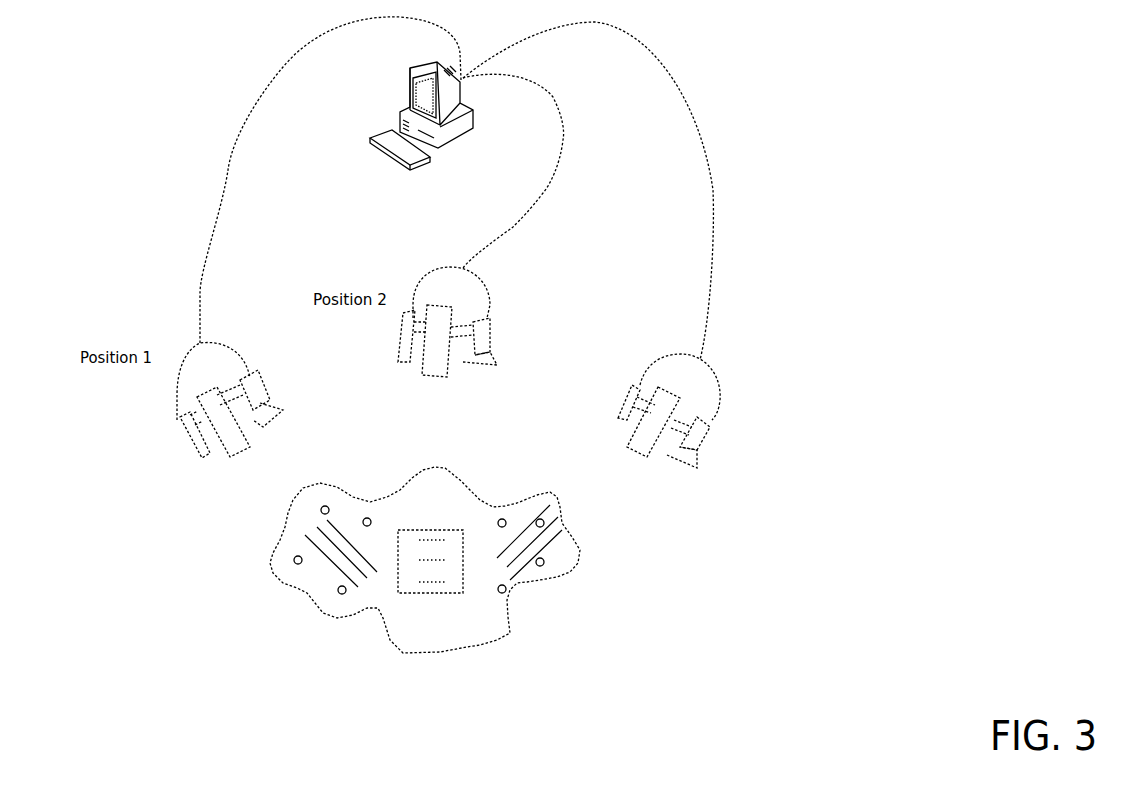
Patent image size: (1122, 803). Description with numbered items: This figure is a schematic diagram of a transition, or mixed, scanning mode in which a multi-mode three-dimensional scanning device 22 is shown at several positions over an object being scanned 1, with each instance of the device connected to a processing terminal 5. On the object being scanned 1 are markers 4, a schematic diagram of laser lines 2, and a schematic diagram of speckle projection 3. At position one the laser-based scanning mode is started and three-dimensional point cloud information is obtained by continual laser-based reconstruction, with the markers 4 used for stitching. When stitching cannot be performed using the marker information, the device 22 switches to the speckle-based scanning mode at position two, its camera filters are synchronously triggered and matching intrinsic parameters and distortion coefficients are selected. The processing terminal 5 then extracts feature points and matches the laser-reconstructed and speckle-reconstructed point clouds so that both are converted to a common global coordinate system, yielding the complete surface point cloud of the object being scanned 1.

The object being scanned 1 is at (558, 577).
The schematic diagram of laser lines 2 is at (300, 532).
The schematic diagram of speckle projection 3 is at (462, 593).
The marker 4 is at (338, 592).
The processing terminal 5 is at (466, 135).
The multi-mode three-dimensional scanning device 22 is at (248, 363).